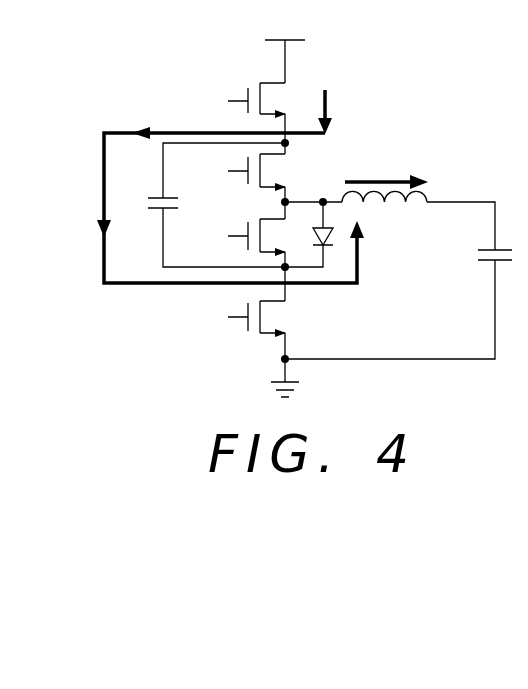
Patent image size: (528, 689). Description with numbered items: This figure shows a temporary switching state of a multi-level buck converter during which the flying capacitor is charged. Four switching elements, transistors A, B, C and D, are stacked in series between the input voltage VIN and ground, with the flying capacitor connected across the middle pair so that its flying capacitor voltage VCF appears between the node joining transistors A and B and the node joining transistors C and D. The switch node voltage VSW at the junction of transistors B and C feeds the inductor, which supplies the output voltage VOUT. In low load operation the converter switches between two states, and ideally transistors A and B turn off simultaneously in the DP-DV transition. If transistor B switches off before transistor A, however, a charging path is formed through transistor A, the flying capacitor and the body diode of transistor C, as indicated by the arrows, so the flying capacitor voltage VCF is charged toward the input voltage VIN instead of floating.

The transistor A is at (265, 100).
The transistor B is at (265, 172).
The transistor C is at (264, 237).
The transistor D is at (265, 319).
The input voltage VIN is at (285, 50).
The flying capacitor voltage VCF is at (205, 205).
The switch node voltage VSW is at (316, 191).
The output voltage VOUT is at (398, 267).